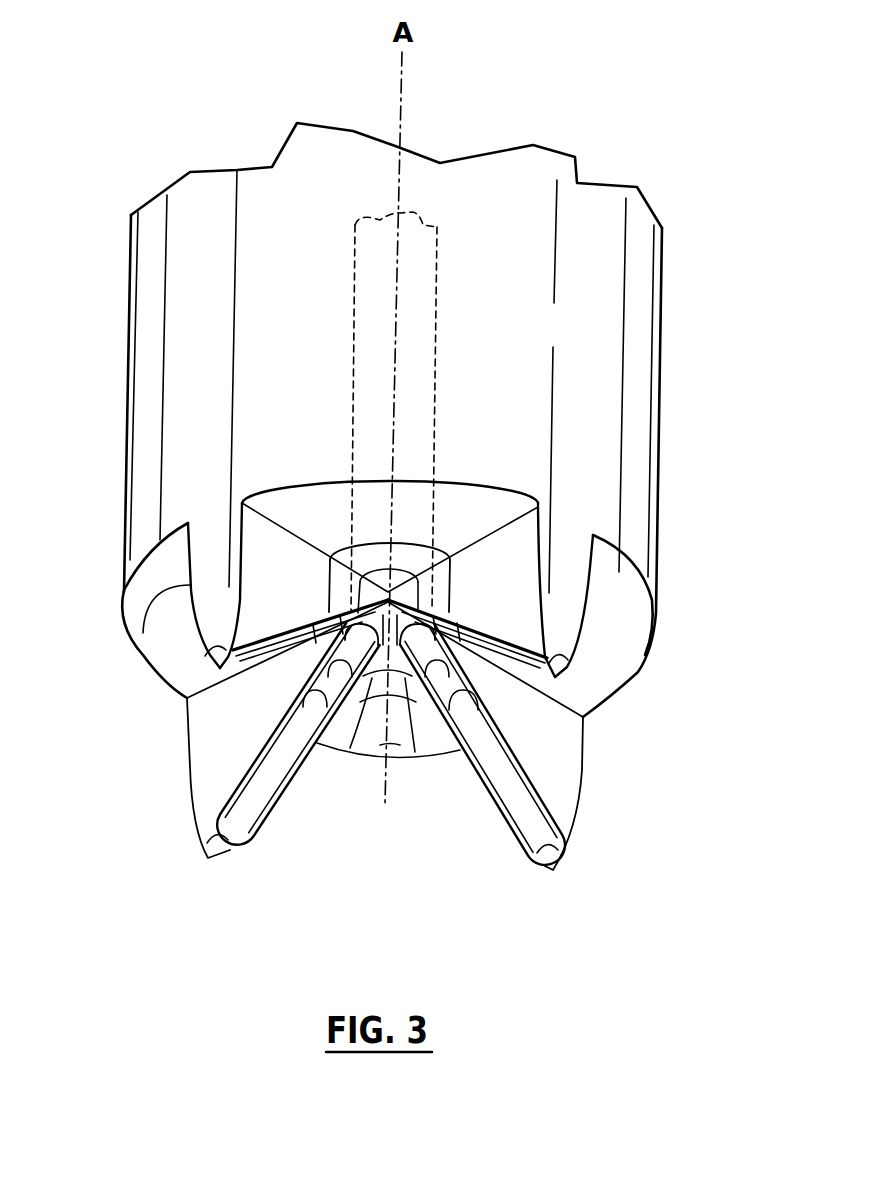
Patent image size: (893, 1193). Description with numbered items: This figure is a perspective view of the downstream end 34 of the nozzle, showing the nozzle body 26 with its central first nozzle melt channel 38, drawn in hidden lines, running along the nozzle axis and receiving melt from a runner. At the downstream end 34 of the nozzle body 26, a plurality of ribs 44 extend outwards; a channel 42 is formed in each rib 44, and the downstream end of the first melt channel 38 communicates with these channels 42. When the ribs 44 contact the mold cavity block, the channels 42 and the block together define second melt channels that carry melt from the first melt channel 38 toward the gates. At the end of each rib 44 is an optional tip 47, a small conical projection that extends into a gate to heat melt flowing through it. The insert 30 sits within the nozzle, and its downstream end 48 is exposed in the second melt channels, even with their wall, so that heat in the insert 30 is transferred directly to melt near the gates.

The nozzle body 26 is at (660, 372).
The first nozzle melt channel 38 is at (437, 326).
The ribs 44 is at (130, 638).
The downstream end of the insert 48 is at (396, 738).
The insert 30 is at (380, 745).
The channels 42 is at (257, 830).
The tip 47 is at (193, 840).
The downstream end of the nozzle body 34 is at (650, 823).